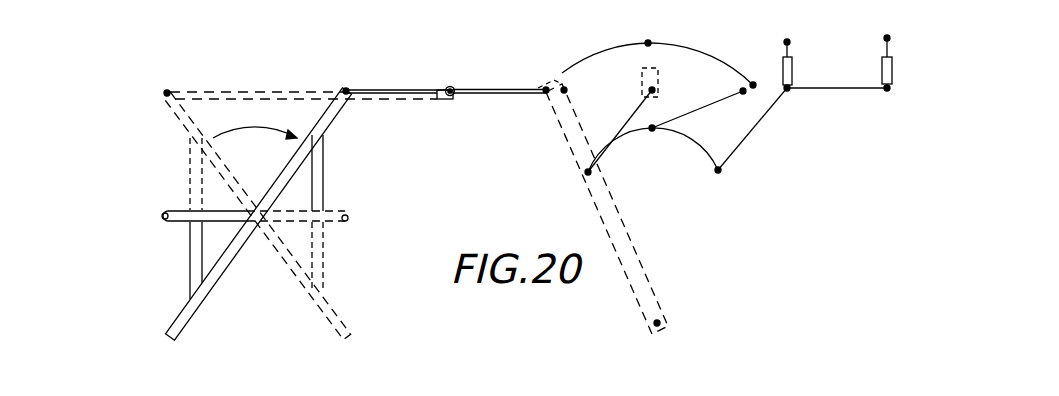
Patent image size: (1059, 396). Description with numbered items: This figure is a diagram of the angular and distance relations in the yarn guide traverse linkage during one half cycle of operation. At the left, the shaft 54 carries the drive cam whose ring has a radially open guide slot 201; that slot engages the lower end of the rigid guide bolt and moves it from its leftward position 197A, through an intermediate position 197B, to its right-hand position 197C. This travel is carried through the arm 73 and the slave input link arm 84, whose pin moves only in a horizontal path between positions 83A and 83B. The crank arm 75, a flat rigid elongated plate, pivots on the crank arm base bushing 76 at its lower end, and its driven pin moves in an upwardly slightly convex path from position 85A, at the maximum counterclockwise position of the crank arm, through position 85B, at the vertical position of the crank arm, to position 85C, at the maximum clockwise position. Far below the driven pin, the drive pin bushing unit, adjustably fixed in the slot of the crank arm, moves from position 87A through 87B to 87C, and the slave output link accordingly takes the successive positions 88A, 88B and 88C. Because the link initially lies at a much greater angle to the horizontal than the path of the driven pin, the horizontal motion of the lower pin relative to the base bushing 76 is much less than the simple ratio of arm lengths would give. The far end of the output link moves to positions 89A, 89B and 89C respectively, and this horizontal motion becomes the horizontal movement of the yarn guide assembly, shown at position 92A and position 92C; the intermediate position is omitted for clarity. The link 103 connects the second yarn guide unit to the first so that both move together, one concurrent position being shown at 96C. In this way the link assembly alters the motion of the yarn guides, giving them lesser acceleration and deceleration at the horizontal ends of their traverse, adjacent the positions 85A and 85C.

The shaft 54 is at (341, 218).
The guide slot 201 is at (303, 288).
The leftward position of guide bolt 197A is at (170, 90).
The intermediate position of guide bolt 197B is at (286, 91).
The right-hand position of guide bolt 197C is at (353, 74).
The arm 73 is at (396, 96).
The position of pin 83 83A is at (448, 86).
The slave input link arm 84 is at (488, 95).
The position of pin 83 83B is at (564, 88).
The position of driven pin 85 85A is at (546, 92).
The crank arm 75 is at (593, 200).
The crank arm base bushing 76 is at (658, 323).
The position of drive pin bushing unit 87 87A is at (586, 172).
The position of driven pin 85 85B is at (661, 20).
The position of drive pin bushing unit 87 87B is at (653, 129).
The position of slave output link 88 88A is at (631, 115).
The position of pin 89 89A is at (650, 90).
The position of yarn guide assembly 92 92A is at (642, 68).
The position of slave output link 88 88B is at (698, 110).
The position of pin 89 89B is at (741, 90).
The position of driven pin 85 85C is at (754, 86).
The position of drive pin bushing unit 87 87C is at (720, 170).
The position of slave output link 88 88C is at (745, 137).
The position of pin 89 89C is at (787, 90).
The position of yarn guide assembly 92 92C is at (789, 77).
The position of yarn guide unit 96 96C is at (884, 62).
The link 103 is at (842, 90).